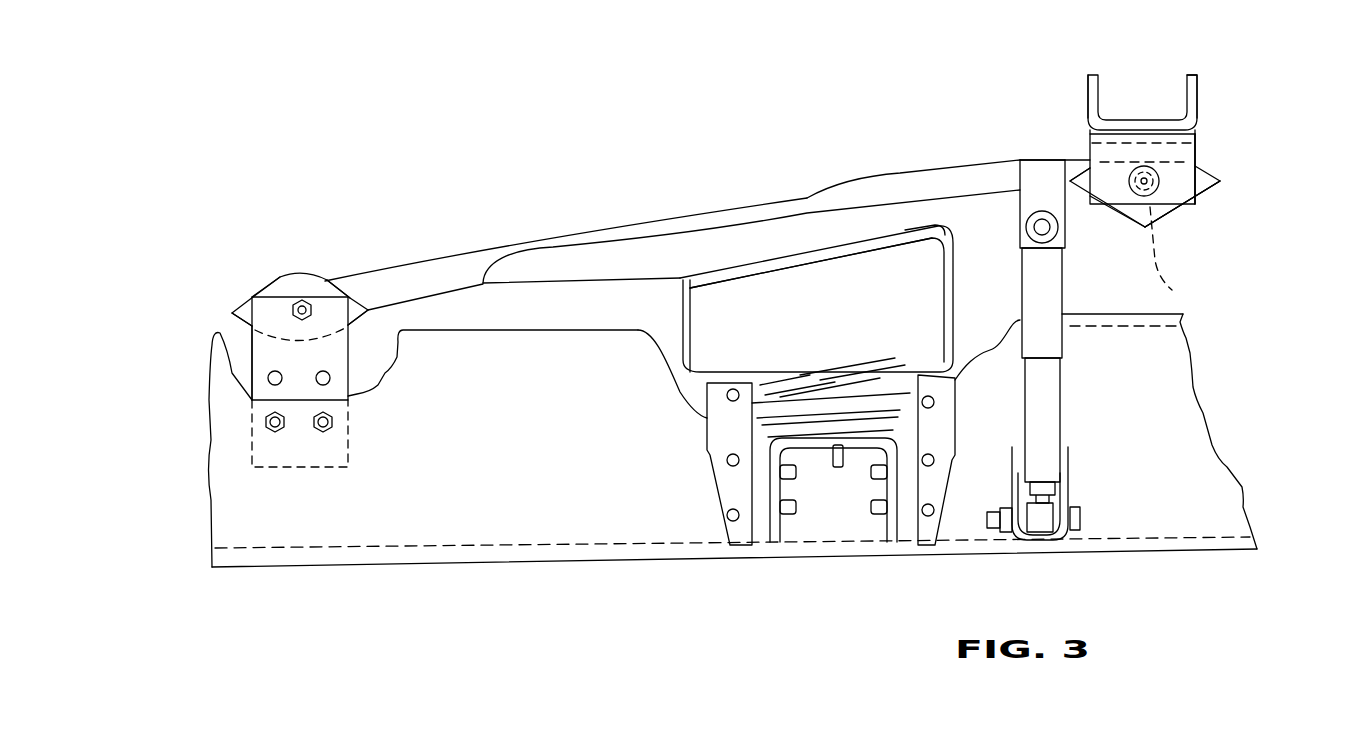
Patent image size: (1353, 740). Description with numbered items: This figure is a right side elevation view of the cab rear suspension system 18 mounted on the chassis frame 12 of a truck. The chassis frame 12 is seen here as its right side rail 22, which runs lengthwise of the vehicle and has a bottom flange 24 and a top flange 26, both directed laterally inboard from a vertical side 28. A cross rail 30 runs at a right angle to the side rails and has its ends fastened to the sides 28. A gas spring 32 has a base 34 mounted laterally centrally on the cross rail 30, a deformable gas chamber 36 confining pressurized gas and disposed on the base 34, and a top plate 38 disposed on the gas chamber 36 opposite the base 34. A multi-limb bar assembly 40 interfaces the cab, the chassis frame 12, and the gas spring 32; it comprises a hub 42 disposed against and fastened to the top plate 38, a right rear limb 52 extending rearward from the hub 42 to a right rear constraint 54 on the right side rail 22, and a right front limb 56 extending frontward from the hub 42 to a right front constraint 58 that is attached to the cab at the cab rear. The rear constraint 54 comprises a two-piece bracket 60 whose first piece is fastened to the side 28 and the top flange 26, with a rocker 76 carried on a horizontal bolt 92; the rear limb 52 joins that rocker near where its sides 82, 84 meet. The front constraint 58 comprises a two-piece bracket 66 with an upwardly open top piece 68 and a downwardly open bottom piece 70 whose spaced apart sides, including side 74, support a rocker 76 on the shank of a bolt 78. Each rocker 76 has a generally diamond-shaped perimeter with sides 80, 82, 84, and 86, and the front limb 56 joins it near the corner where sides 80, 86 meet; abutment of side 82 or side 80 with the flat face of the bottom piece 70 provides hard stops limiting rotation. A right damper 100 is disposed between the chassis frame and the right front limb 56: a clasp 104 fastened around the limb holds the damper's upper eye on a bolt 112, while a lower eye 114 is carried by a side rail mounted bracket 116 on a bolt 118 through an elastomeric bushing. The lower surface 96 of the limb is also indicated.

The chassis frame 12 is at (1201, 391).
The suspension system 18 is at (729, 202).
The right side rail 22 is at (1193, 353).
The bottom flange 24 is at (438, 565).
The top flange 26 is at (469, 328).
The vertical side 28 is at (382, 451).
The cross rail 30 is at (900, 445).
The gas spring 32 is at (845, 323).
The base 34 is at (935, 397).
The deformable gas chamber 36 is at (816, 331).
The top plate 38 is at (943, 220).
The multi-limb bar assembly 40 is at (430, 262).
The hub 42 is at (905, 226).
The right rear limb 52 is at (628, 222).
The right rear constraint 54 is at (301, 322).
The right front limb 56 is at (937, 170).
The right front constraint 58 is at (1165, 161).
The two-piece bracket 60 is at (348, 367).
The two-piece bracket 66 is at (1161, 79).
The top piece 68 is at (1200, 98).
The bottom piece 70 is at (1205, 135).
The side 74 is at (1190, 202).
The rocker 76 is at (230, 310).
The bolt 78 is at (1180, 252).
The side 80 is at (268, 283).
The side 82 is at (327, 280).
The side 84 is at (348, 325).
The side 86 is at (253, 326).
The bolt 92 is at (300, 300).
The beam lower surface 96 is at (652, 263).
The right damper 100 is at (1080, 336).
The clasp 104 is at (1044, 168).
The bolt 112 is at (1035, 215).
The lower eye 114 is at (1043, 525).
The side rail mounted bracket 116 is at (1068, 462).
The bolt 118 is at (1082, 513).